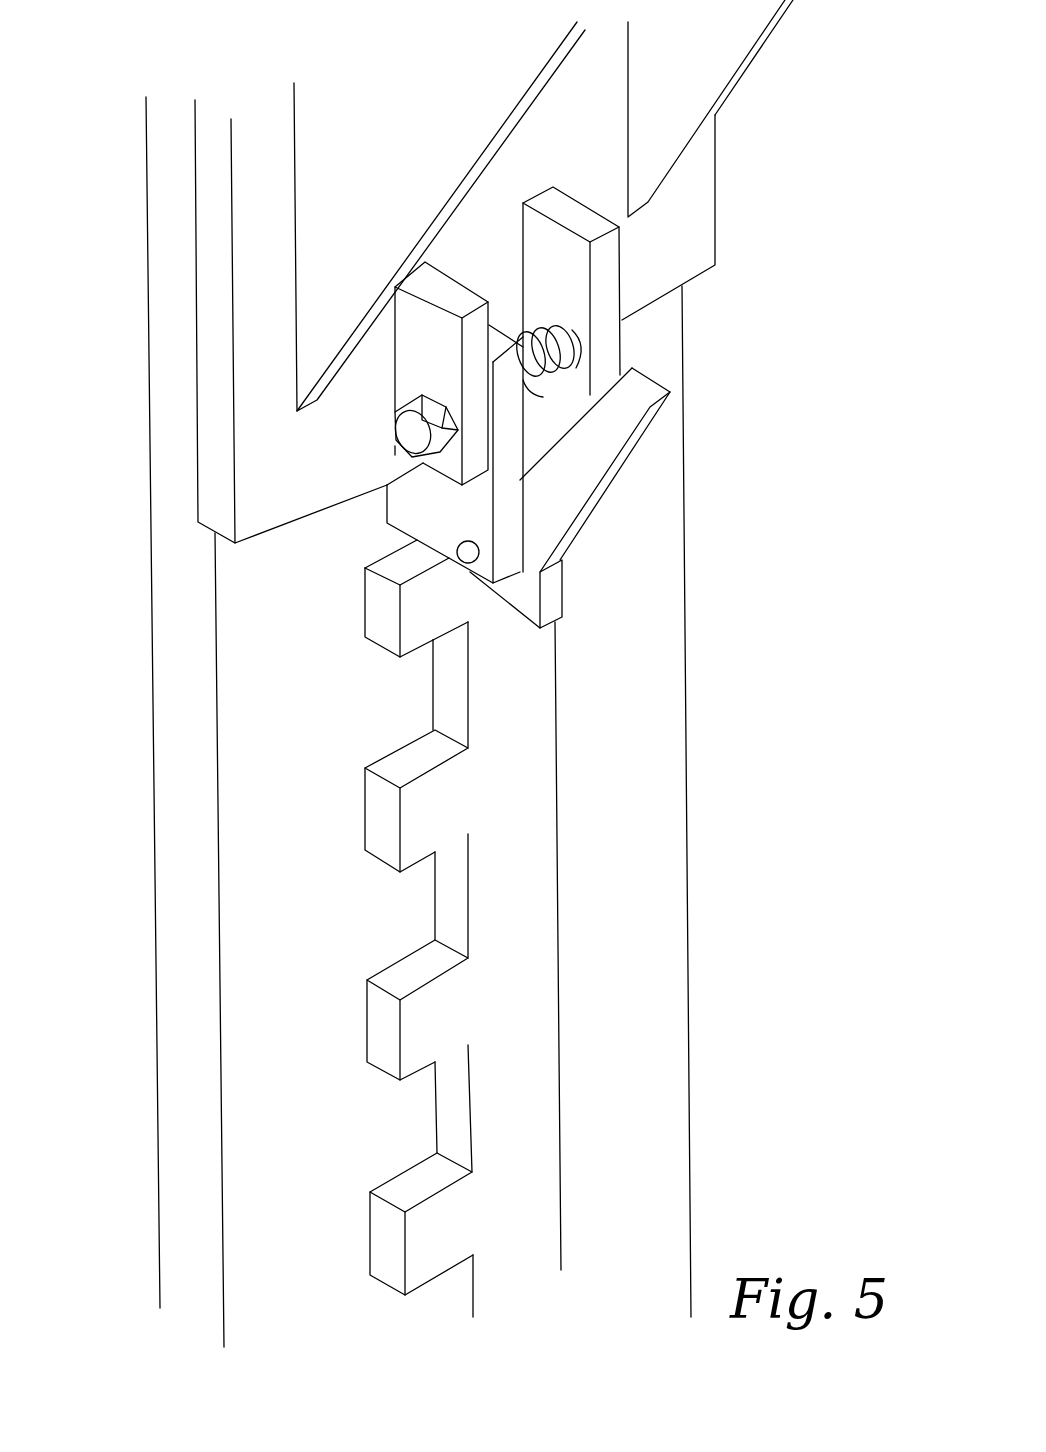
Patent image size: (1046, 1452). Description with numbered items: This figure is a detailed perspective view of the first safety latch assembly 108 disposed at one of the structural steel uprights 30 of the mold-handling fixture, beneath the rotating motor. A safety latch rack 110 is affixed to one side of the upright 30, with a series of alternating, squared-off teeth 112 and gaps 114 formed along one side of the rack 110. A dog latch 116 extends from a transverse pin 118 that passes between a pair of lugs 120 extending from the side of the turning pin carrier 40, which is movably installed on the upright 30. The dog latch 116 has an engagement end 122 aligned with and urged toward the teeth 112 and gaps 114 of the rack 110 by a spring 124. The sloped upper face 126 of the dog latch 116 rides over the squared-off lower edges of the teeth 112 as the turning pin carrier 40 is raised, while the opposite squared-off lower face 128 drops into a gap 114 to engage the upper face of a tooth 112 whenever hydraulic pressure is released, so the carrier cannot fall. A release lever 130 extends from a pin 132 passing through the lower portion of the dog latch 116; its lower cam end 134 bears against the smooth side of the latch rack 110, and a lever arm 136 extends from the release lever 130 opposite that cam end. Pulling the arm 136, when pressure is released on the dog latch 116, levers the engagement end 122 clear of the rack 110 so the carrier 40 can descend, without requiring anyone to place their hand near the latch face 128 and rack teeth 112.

The upright 30 is at (148, 948).
The turning pin carrier 40 is at (713, 213).
The latch assembly 108 is at (632, 568).
The safety latch rack 110 is at (437, 937).
The teeth 112 is at (397, 1180).
The gaps 114 is at (458, 708).
The dog latch 116 is at (470, 523).
The transverse pin 118 is at (527, 390).
The lugs 120 is at (543, 244).
The engagement end 122 is at (392, 503).
The spring 124 is at (557, 318).
The sloped upper face 126 is at (395, 463).
The lower face 128 is at (405, 540).
The release lever 130 is at (596, 517).
The pin 132 is at (465, 563).
The lower cam end 134 is at (477, 595).
The lever arm 136 is at (636, 432).